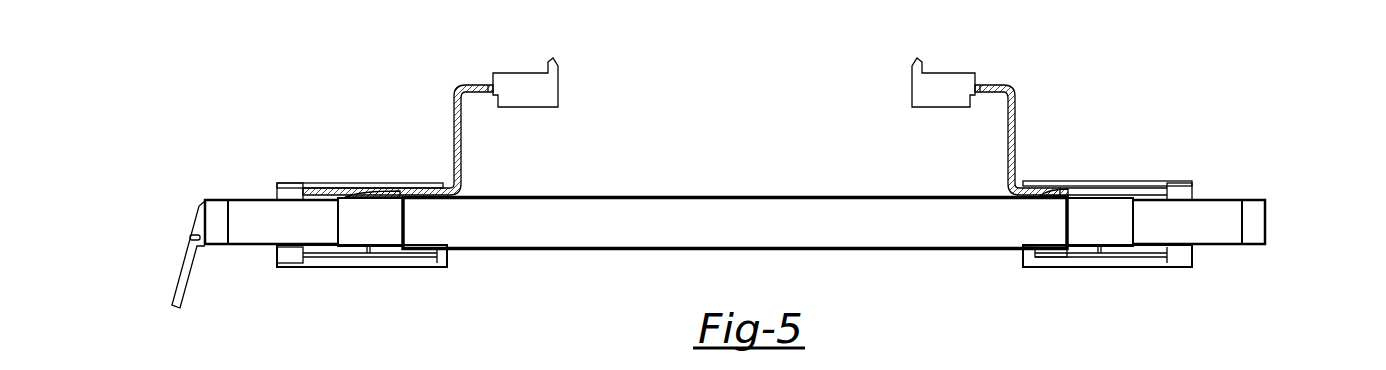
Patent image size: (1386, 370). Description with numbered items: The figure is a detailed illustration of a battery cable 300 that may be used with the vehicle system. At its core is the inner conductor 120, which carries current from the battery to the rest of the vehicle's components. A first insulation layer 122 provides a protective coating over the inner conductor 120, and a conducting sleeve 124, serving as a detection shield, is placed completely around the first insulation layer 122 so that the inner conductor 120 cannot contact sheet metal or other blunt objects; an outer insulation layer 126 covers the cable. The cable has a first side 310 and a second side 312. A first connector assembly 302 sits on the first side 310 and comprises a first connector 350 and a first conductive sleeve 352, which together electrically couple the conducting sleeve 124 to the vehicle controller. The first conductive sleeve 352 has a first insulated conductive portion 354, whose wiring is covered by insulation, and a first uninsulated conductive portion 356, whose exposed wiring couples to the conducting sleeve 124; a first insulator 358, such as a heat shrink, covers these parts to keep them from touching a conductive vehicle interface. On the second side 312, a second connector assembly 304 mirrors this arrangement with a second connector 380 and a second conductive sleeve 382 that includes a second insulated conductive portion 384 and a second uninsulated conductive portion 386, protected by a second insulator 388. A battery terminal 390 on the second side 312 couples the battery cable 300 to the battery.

The inner conductor 120 is at (215, 217).
The first insulation layer 122 is at (250, 215).
The conducting sleeve 124 is at (1117, 225).
The outer insulation layer 126 is at (725, 203).
The battery cable 300 is at (783, 60).
The first connector assembly 302 is at (1034, 76).
The second connector assembly 304 is at (491, 48).
The first side 310 is at (1102, 272).
The second side 312 is at (368, 272).
The first connector 350 is at (950, 73).
The first conductive sleeve 352 is at (1018, 138).
The first insulated conductive portion 354 is at (1000, 92).
The first uninsulated conductive portion 356 is at (1117, 198).
The first insulator 358 is at (1187, 180).
The second connector 380 is at (525, 73).
The second conductive sleeve 382 is at (470, 90).
The second insulated conductive portion 384 is at (452, 138).
The second uninsulated conductive portion 386 is at (355, 196).
The second insulator 388 is at (282, 182).
The battery terminal 390 is at (185, 277).